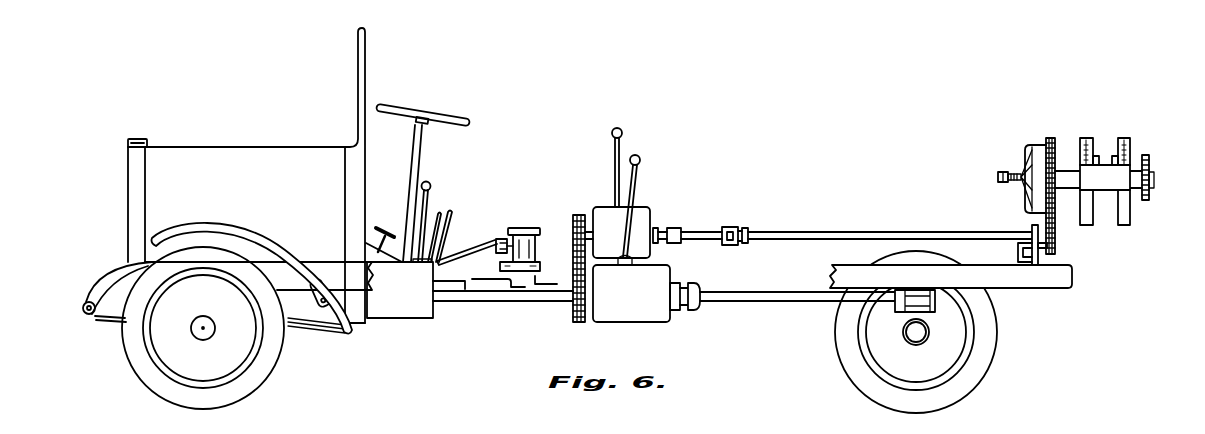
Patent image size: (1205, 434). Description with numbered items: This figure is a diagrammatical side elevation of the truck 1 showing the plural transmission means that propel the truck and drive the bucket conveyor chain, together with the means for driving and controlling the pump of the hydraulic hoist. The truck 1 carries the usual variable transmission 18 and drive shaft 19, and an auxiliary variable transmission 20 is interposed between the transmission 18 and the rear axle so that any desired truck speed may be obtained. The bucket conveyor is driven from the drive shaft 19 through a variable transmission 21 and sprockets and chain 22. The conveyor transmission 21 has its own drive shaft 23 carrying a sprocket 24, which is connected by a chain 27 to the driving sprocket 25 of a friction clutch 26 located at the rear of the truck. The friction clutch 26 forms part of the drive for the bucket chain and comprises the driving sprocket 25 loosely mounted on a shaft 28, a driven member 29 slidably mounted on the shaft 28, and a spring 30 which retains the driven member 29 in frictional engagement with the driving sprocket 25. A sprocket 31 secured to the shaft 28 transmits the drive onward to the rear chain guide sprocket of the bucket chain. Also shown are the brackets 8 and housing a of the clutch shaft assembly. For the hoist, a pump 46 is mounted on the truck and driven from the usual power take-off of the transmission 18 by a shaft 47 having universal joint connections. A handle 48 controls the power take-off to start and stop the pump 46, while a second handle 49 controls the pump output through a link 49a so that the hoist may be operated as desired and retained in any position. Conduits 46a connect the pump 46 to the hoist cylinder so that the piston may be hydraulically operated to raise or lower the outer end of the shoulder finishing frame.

The truck 1 is at (326, 360).
The brackets 8 is at (1088, 140).
The variable transmission 18 is at (414, 318).
The drive shaft 19 is at (548, 303).
The auxiliary variable transmission 20 is at (640, 314).
The variable transmission 21 is at (645, 218).
The sprockets and chain 22 is at (573, 252).
The drive shaft 23 is at (851, 236).
The sprocket 24 is at (1055, 248).
The driving sprocket 25 is at (1040, 141).
The friction clutch 26 is at (1027, 131).
The chain 27 is at (1057, 244).
The shaft 28 is at (1055, 213).
The driven member 29 is at (1026, 196).
The spring 30 is at (1019, 171).
The sprocket 31 is at (1147, 157).
The pump 46 is at (522, 244).
The conduits 46a is at (536, 285).
The shaft 47 is at (466, 254).
The handle 48 is at (440, 212).
The handle 49 is at (450, 210).
The link 49a is at (476, 285).
The housing a is at (1108, 186).